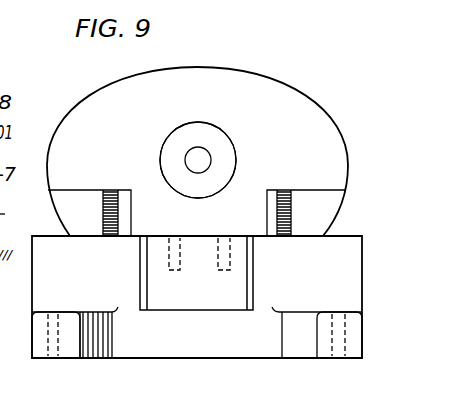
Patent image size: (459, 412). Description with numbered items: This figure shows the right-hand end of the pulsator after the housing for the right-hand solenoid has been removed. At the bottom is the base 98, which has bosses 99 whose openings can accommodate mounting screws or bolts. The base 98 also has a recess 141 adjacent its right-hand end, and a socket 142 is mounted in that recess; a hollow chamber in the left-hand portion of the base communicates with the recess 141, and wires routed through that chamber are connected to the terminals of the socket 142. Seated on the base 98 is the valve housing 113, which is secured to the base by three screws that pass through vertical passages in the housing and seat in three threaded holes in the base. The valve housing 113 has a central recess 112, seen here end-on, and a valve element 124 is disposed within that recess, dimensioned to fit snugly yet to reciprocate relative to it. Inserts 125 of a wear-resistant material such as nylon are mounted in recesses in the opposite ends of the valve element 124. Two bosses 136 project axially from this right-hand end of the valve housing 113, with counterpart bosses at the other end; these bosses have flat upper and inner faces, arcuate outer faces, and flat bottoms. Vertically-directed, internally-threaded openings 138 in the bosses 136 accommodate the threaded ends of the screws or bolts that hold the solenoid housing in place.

The central recess 112 is at (187, 122).
The valve housing 113 is at (90, 92).
The valve element 124 is at (227, 135).
The inserts 125 is at (212, 161).
The bosses 136 is at (70, 225).
The internally-threaded openings 138 is at (103, 206).
The recess 141 is at (254, 280).
The socket 142 is at (222, 298).
The base 98 is at (173, 352).
The bosses 99 is at (72, 350).